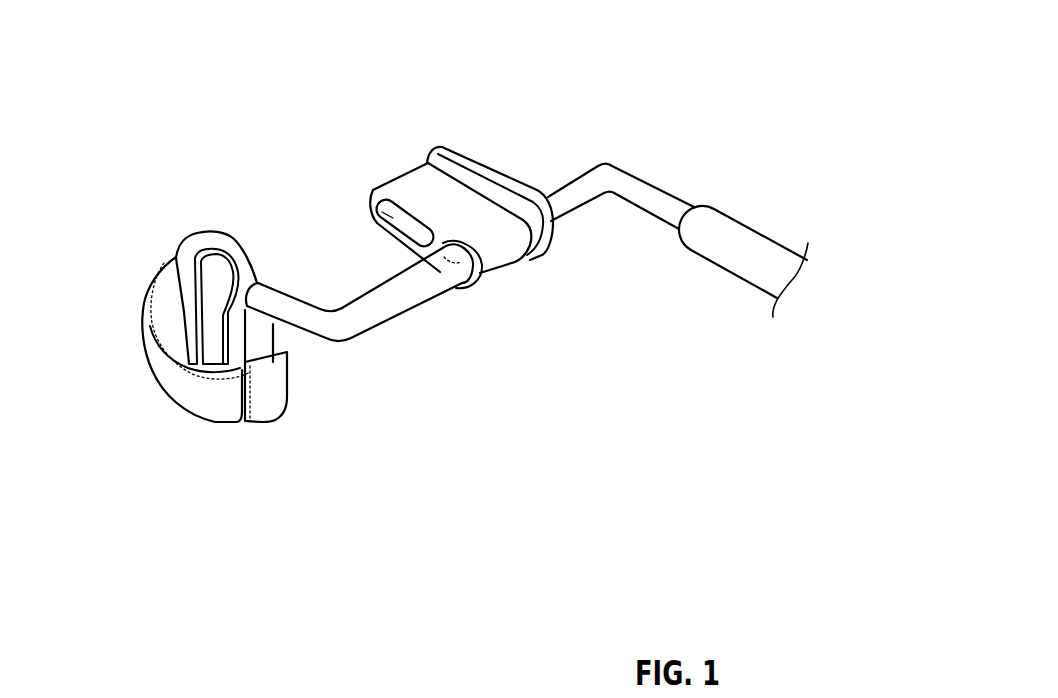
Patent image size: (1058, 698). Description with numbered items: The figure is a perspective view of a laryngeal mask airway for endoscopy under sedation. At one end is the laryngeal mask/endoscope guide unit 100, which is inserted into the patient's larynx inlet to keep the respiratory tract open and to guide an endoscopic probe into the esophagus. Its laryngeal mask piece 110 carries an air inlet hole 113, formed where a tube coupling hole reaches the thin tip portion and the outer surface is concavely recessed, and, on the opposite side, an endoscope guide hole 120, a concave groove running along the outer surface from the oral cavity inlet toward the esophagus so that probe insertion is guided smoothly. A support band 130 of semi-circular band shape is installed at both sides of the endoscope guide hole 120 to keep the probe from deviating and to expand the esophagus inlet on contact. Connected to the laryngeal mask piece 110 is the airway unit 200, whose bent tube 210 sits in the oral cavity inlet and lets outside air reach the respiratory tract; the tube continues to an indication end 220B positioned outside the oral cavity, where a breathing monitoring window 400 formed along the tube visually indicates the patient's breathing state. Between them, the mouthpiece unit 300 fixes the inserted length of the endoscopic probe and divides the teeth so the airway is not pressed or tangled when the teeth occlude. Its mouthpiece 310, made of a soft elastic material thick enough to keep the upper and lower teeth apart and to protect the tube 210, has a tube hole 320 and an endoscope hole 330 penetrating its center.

The laryngeal mask/endoscope guide unit 100 is at (201, 350).
The laryngeal mask piece 110 is at (220, 243).
The air inlet hole 113 is at (188, 336).
The endoscope guide hole 120 is at (213, 291).
The support band 130 is at (185, 400).
The airway unit 200 is at (523, 269).
The tube 210 is at (418, 298).
The indication end 220B is at (645, 182).
The mouthpiece unit 300 is at (509, 214).
The mouthpiece 310 is at (478, 193).
The tube hole 320 is at (443, 252).
The endoscope hole 330 is at (378, 190).
The breathing monitoring window 400 is at (780, 218).